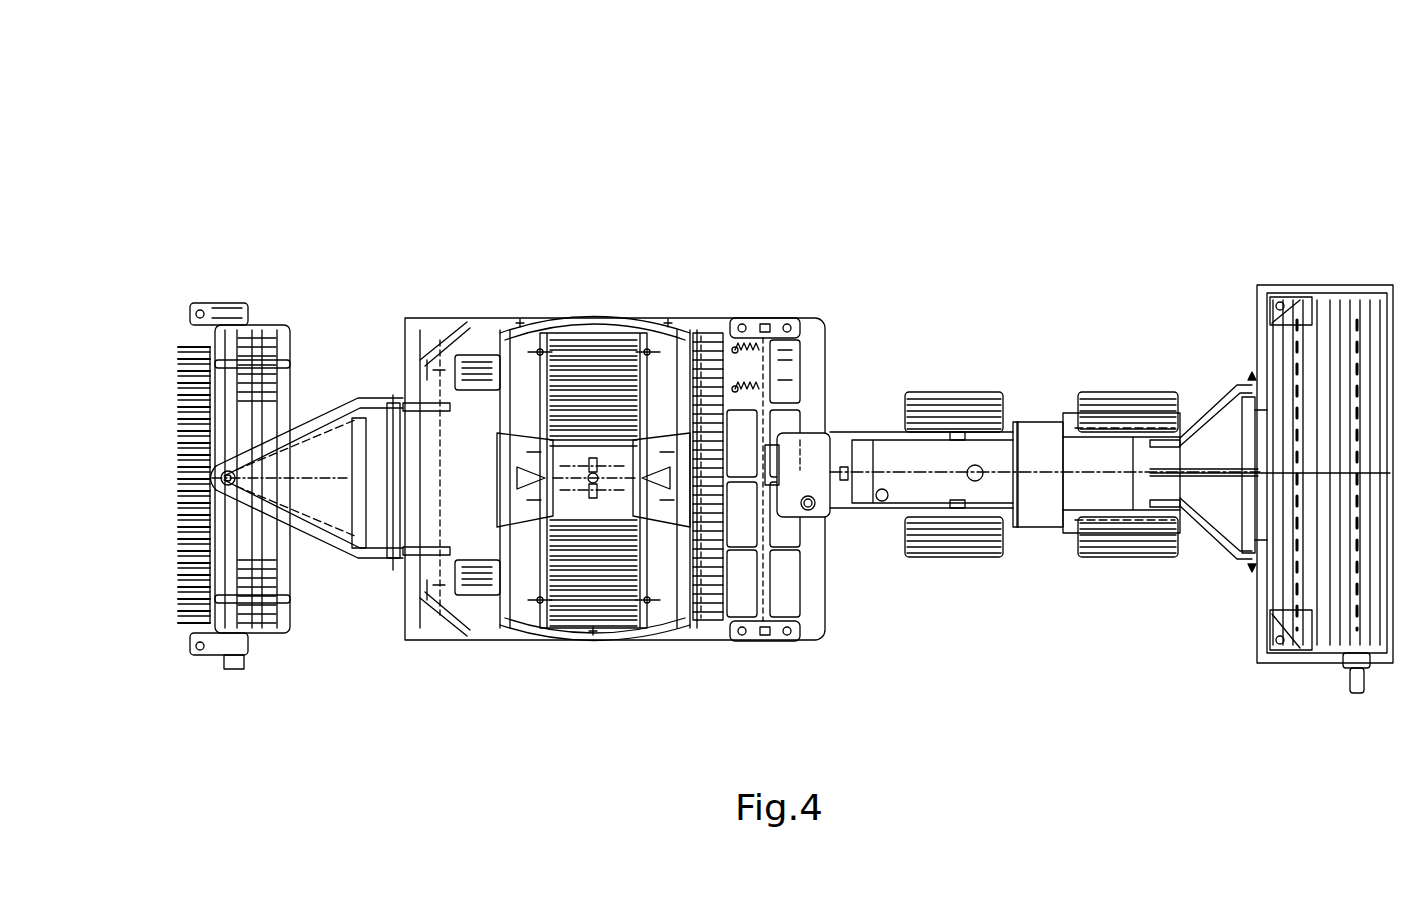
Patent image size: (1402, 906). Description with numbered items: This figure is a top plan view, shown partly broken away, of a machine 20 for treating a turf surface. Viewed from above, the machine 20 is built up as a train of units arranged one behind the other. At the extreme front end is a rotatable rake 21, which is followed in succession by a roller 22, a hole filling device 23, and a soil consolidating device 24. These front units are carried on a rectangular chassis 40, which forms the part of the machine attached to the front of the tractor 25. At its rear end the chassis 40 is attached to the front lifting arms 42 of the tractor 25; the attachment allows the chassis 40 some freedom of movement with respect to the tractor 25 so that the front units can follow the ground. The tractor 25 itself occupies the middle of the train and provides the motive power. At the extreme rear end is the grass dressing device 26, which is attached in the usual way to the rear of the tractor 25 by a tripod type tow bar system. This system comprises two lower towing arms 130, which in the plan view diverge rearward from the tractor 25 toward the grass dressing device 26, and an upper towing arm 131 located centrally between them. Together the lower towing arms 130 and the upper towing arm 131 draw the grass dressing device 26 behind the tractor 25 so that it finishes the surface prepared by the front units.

The machine 20 is at (250, 136).
The rotatable rake 21 is at (178, 433).
The roller 22 is at (580, 377).
The hole filling device 23 is at (710, 302).
The soil consolidating device 24 is at (758, 292).
The tractor 25 is at (1000, 312).
The grass dressing device 26 is at (1312, 264).
The rectangular chassis 40 is at (815, 627).
The front lifting arms 42 is at (862, 432).
The lower towing arms 130 is at (1216, 404).
The upper towing arm 131 is at (1222, 478).